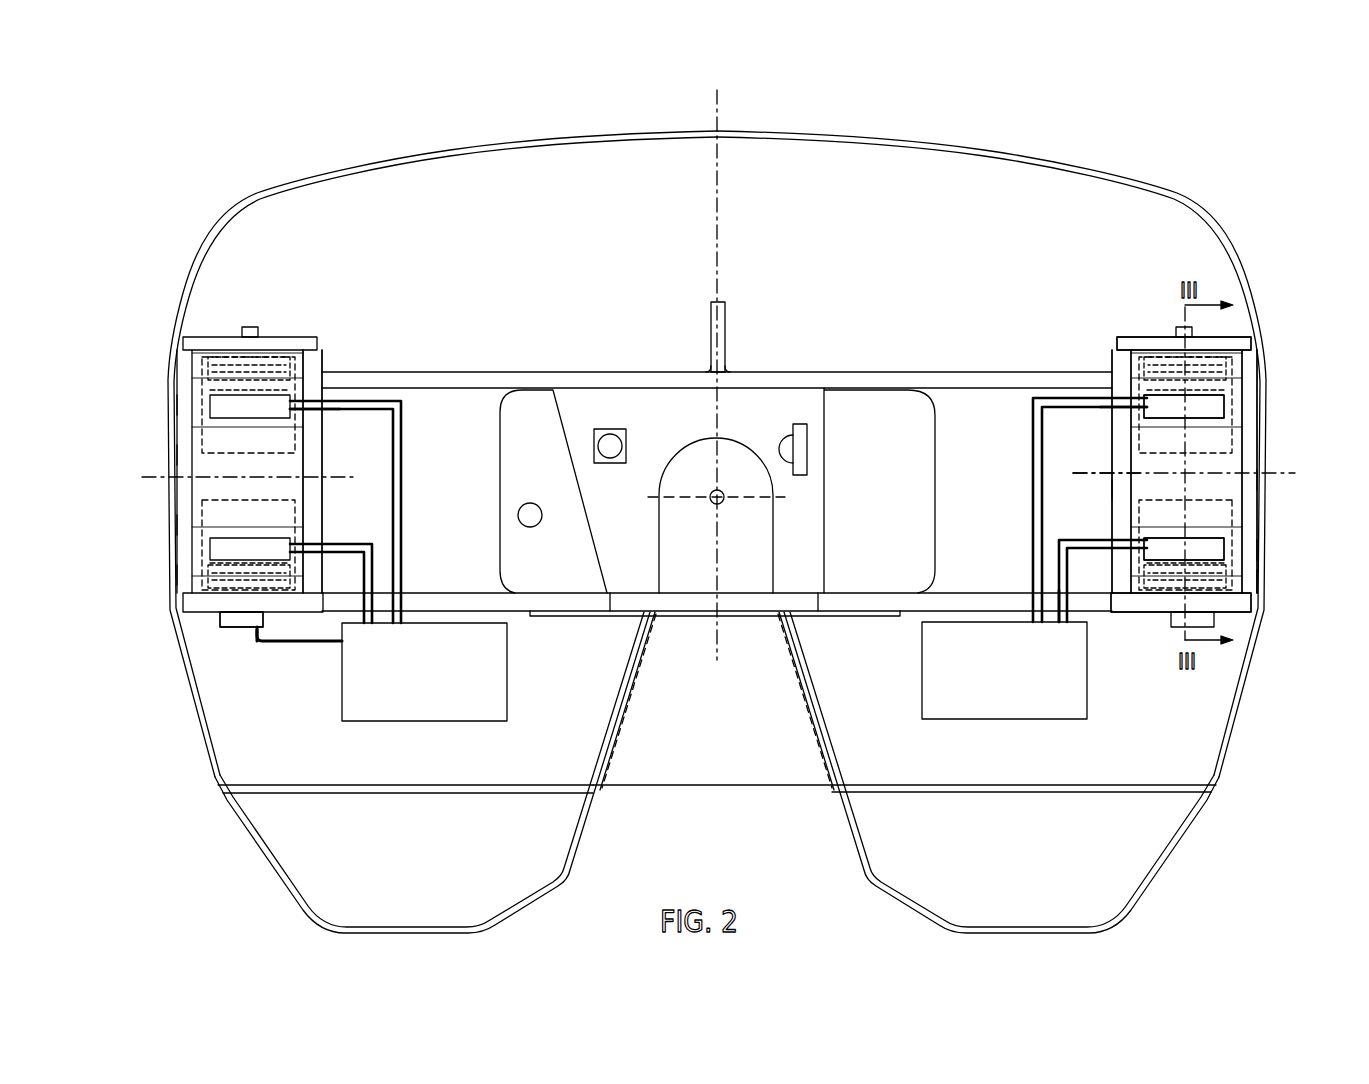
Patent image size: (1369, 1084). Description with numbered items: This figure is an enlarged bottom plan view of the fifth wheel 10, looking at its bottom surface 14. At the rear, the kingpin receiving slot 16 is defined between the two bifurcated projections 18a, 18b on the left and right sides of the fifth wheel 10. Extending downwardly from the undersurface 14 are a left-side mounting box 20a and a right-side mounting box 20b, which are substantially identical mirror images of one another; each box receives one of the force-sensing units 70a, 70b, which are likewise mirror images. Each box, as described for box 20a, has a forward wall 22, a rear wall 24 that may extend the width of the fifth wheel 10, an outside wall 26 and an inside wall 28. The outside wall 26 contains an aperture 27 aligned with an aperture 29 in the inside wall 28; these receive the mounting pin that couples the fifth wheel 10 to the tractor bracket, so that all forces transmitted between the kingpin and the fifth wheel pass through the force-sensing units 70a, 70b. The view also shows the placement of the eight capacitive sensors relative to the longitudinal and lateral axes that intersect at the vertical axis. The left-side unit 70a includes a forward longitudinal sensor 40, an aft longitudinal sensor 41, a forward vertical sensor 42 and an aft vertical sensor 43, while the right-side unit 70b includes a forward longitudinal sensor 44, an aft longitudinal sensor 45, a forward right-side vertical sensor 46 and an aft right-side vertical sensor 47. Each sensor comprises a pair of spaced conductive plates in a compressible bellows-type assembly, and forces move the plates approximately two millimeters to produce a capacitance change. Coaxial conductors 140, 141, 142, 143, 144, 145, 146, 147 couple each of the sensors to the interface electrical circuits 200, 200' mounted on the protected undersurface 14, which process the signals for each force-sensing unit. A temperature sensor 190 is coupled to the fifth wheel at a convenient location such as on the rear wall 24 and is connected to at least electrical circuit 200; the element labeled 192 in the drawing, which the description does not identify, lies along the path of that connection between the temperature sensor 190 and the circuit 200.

The fifth wheel 10 is at (878, 116).
The bottom surface 14 is at (909, 278).
The kingpin receiving slot 16 is at (693, 572).
The bifurcated projection 18a is at (922, 890).
The bifurcated projection 18b is at (500, 892).
The left-side mounting box 20a is at (1095, 449).
The right-side mounting box 20b is at (337, 453).
The forward wall 22 is at (1140, 333).
The rear wall 24 is at (1127, 612).
The outside wall 26 is at (1268, 577).
The aperture 27 is at (1268, 480).
The inside wall 28 is at (1107, 497).
The aperture 29 is at (1102, 483).
The forward longitudinal sensor 40 is at (1118, 345).
The aft longitudinal sensor 41 is at (1268, 548).
The forward vertical sensor 42 is at (1215, 433).
The aft vertical sensor 43 is at (1163, 500).
The forward longitudinal sensor 44 is at (190, 404).
The aft longitudinal sensor 45 is at (215, 548).
The forward right-side vertical sensor 46 is at (212, 441).
The aft right-side vertical sensor 47 is at (212, 498).
The force-sensing unit 70a is at (1232, 468).
The force-sensing unit 70b is at (300, 466).
The conductor 140 is at (1035, 402).
The conductor 141 is at (1077, 547).
The electrical conductor 142 is at (1053, 412).
The electrical conductor 143 is at (1085, 605).
The conductor 144 is at (380, 400).
The conductor 145 is at (327, 545).
The electrical conductor 146 is at (338, 413).
The electrical conductor 147 is at (358, 577).
The temperature sensor 190 is at (227, 628).
The connecting line 192 is at (272, 647).
The interface electrical circuit 200 is at (1048, 675).
The interface electrical circuit 200' is at (475, 678).